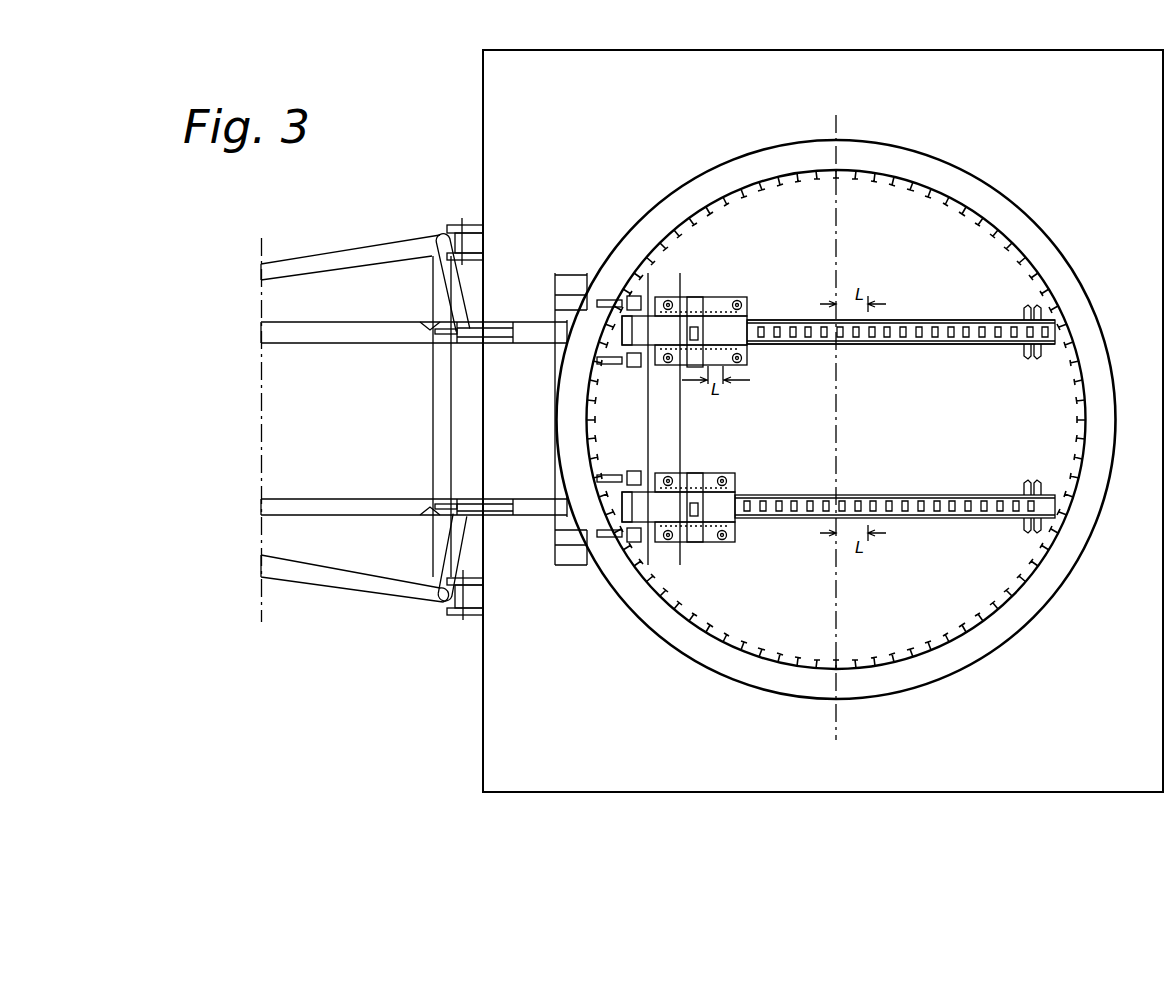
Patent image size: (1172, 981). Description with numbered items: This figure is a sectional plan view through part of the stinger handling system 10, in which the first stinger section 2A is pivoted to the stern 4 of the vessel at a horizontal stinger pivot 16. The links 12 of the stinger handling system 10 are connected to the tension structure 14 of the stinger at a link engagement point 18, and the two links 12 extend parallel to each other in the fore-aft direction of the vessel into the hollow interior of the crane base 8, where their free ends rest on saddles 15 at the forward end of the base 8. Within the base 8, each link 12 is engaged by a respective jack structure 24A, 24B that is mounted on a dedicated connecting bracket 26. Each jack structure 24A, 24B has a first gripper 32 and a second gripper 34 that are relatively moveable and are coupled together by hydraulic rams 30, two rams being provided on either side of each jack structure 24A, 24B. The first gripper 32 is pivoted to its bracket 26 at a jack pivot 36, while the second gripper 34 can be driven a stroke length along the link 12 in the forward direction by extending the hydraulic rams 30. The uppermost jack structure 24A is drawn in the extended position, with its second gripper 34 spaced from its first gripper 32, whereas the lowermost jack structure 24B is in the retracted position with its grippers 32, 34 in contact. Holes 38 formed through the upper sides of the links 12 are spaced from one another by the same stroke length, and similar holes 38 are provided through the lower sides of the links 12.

The first stinger section 2A is at (262, 323).
The stern 4 is at (483, 705).
The crane base 8 is at (1062, 575).
The stinger handling system 10 is at (532, 225).
The links 12 is at (963, 320).
The tension structure 14 is at (378, 250).
The saddles 15 is at (1037, 307).
The stinger pivot 16 is at (462, 618).
The link engagement point 18 is at (473, 517).
The uppermost jack structure 24A is at (657, 245).
The lowermost jack structure 24B is at (809, 602).
The connecting brackets 26 is at (608, 322).
The hydraulic rams 30 is at (705, 297).
The first gripper 32 is at (627, 545).
The second gripper 34 is at (697, 550).
The jack pivot 36 is at (620, 548).
The holes 38 is at (930, 320).